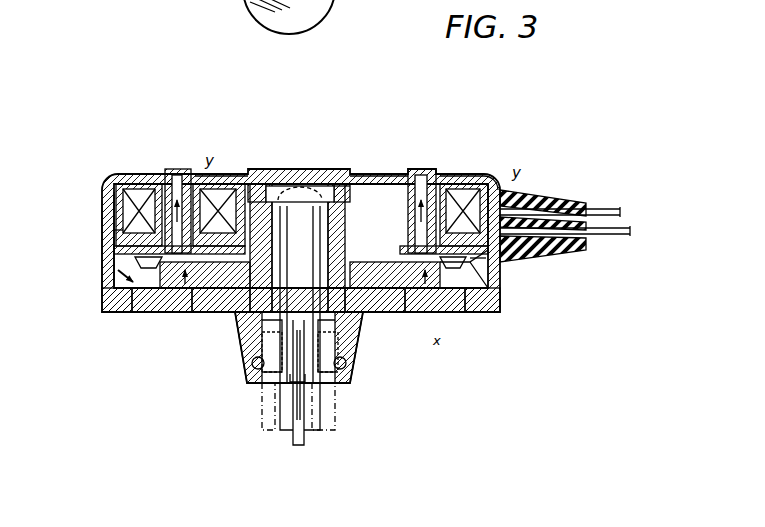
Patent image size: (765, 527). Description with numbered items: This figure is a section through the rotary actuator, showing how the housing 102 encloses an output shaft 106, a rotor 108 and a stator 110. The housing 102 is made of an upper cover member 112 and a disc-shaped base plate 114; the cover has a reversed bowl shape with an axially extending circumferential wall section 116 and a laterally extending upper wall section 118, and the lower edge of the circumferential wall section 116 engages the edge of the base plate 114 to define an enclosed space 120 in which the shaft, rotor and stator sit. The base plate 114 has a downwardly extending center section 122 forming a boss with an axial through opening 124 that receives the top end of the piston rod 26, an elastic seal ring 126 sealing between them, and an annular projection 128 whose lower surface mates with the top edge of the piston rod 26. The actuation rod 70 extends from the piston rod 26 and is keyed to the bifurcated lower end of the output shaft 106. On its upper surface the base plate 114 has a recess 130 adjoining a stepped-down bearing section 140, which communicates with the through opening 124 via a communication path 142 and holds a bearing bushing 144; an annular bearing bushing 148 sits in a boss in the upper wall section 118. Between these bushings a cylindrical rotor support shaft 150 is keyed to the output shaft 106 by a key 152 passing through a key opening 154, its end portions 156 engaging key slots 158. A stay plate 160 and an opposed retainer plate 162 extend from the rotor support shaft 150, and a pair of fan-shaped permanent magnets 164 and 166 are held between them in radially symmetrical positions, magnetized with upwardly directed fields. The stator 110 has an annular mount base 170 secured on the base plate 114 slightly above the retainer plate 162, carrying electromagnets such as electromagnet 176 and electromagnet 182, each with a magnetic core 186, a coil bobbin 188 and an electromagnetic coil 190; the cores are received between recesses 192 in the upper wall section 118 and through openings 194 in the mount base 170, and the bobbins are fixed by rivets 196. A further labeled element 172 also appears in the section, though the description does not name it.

The piston rod 26 is at (262, 418).
The actuation rod 70 is at (293, 436).
The housing 102 is at (100, 210).
The output shaft 106 is at (320, 178).
The rotor 108 is at (175, 306).
The stator 110 is at (114, 192).
The upper cover member 112 is at (470, 182).
The base plate 114 is at (457, 312).
The circumferential wall section 116 is at (500, 270).
The upper wall section 118 is at (222, 184).
The enclosed space 120 is at (116, 230).
The center section 122 is at (357, 363).
The through opening 124 is at (336, 345).
The elastic seal ring 126 is at (346, 383).
The annular projection 128 is at (258, 330).
The recess 130 is at (200, 306).
The bearing section 140 is at (274, 308).
The communication path 142 is at (298, 448).
The bearing bushing 144 is at (363, 315).
The annular bearing bushing 148 is at (258, 184).
The rotor support shaft 150 is at (395, 182).
The key 152 is at (288, 186).
The key opening 154 is at (312, 186).
The end portions 156 is at (356, 178).
The key slots 158 is at (352, 186).
The stay plate 160 is at (418, 300).
The retainer plate 162 is at (345, 265).
The permanent magnet 164 is at (180, 288).
The permanent magnet 166 is at (475, 312).
The mount base 170 is at (135, 252).
The wedge 172 is at (131, 279).
The electromagnet 176 is at (140, 186).
The electromagnet 182 is at (496, 186).
The magnetic core 186 is at (184, 212).
The coil bobbin 188 is at (138, 184).
The electromagnetic coil 190 is at (122, 180).
The recesses 192 is at (178, 172).
The through openings 194 is at (118, 306).
The rivets 196 is at (140, 262).